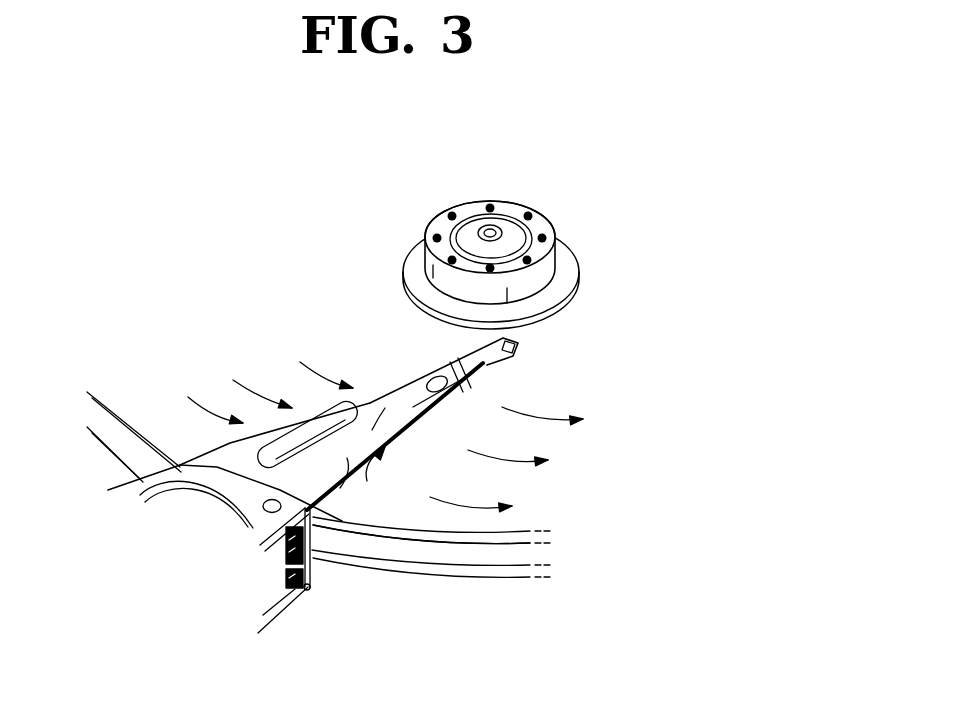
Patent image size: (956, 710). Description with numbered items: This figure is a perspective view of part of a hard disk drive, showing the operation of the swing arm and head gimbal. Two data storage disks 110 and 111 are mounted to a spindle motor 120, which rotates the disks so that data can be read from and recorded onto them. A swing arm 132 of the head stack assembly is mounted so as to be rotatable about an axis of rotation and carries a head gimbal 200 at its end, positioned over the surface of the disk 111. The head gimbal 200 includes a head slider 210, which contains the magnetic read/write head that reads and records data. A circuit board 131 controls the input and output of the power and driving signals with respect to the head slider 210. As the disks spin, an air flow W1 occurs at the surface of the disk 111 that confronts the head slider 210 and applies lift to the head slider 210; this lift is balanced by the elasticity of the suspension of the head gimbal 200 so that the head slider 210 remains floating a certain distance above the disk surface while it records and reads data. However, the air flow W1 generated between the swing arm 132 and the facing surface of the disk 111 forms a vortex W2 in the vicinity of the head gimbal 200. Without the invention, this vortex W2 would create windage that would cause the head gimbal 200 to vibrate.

The data storage disk 110 is at (490, 578).
The data storage disk 111 is at (417, 541).
The spindle motor 120 is at (412, 224).
The circuit board 131 is at (280, 589).
The swing arm 132 is at (407, 395).
The head gimbal 200 is at (490, 380).
The head slider 210 is at (518, 343).
The air flow W1 is at (253, 392).
The vortex W2 is at (367, 481).